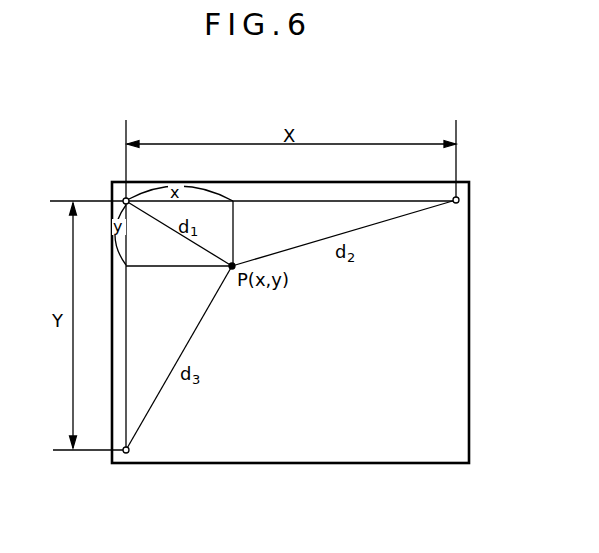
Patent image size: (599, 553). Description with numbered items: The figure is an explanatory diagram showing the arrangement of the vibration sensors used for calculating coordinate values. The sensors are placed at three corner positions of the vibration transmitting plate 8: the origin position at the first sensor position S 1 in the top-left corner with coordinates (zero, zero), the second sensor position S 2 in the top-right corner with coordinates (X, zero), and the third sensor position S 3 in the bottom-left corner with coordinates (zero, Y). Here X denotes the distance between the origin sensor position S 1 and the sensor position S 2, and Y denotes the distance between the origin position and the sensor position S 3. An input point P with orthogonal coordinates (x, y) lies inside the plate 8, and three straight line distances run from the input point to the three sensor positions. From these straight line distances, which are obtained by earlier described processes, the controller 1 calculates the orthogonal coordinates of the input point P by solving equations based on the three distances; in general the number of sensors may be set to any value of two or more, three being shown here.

The vibration transmitting plate 8 is at (470, 338).
The controller 1 is at (123, 197).
The sensor s2 at (X,0) 2 is at (440, 224).
The sensor s3 at (0,Y) 3 is at (164, 451).